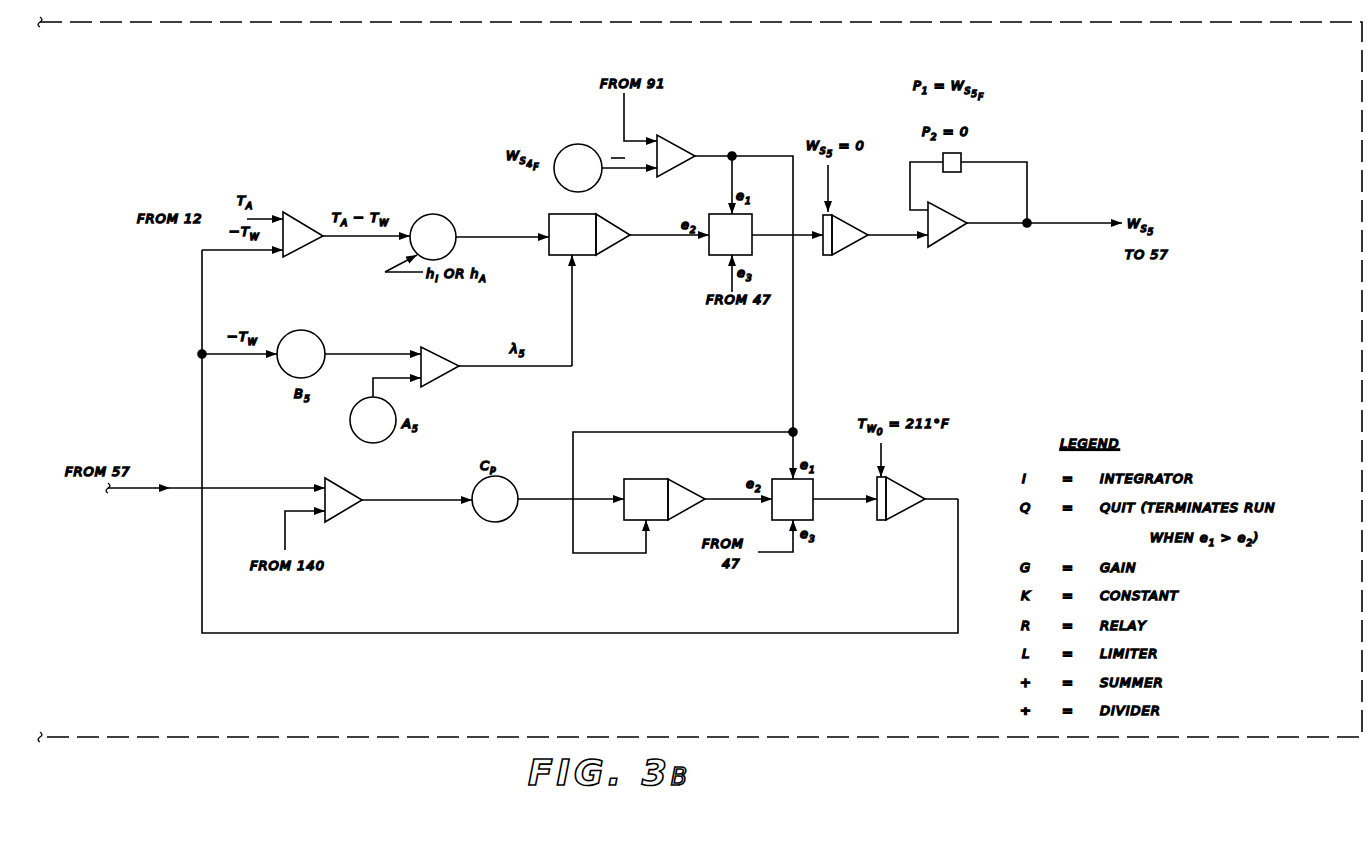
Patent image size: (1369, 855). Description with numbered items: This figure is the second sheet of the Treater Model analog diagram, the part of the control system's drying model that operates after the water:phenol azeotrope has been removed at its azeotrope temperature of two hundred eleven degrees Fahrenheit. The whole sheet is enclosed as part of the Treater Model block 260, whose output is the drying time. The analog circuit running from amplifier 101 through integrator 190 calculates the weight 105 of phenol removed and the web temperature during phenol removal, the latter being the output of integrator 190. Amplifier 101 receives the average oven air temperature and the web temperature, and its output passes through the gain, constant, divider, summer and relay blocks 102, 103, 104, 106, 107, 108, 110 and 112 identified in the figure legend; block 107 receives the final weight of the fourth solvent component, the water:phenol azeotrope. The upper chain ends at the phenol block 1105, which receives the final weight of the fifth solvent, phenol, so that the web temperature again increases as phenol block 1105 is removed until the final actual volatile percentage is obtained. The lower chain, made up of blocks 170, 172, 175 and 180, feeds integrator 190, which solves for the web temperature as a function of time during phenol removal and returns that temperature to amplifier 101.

The amplifier 101 is at (303, 217).
The gain 102 is at (445, 217).
The gain 103 is at (313, 333).
The constant 104 is at (350, 427).
The weight of phenol removed 105 is at (843, 220).
The divider 106 is at (606, 248).
The block 107 is at (580, 144).
The summer 108 is at (677, 147).
The relay 110 is at (750, 213).
The summer 112 is at (436, 350).
The summer 170 is at (343, 483).
The gain 172 is at (510, 481).
The divider 175 is at (632, 478).
The relay 180 is at (785, 478).
The integrator 190 is at (905, 487).
The phenol block 1105 is at (955, 240).
The Treater Model block 260 is at (262, 22).